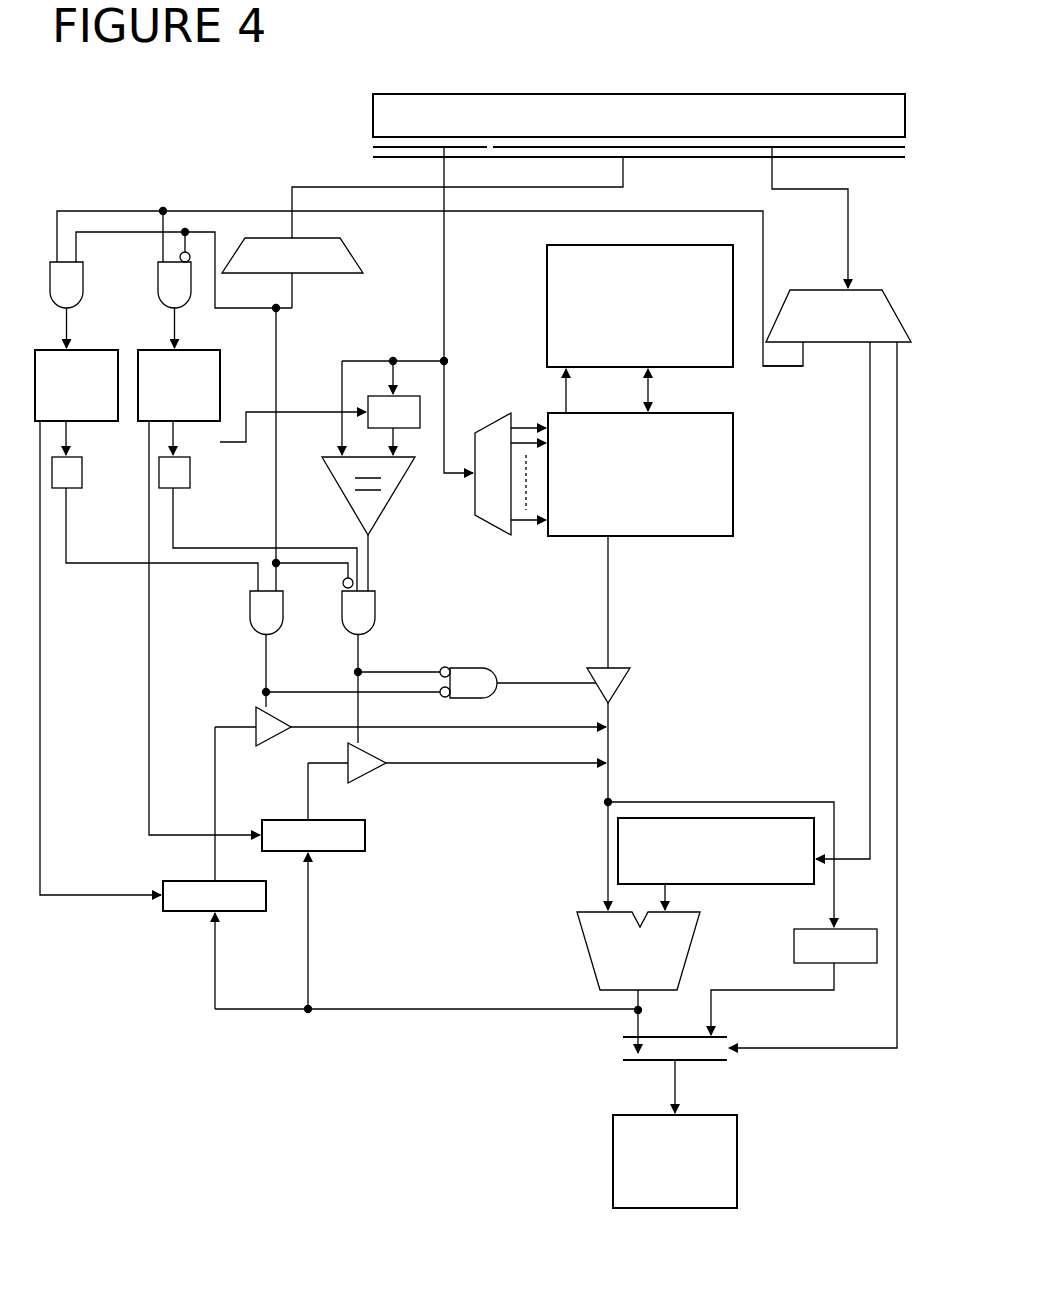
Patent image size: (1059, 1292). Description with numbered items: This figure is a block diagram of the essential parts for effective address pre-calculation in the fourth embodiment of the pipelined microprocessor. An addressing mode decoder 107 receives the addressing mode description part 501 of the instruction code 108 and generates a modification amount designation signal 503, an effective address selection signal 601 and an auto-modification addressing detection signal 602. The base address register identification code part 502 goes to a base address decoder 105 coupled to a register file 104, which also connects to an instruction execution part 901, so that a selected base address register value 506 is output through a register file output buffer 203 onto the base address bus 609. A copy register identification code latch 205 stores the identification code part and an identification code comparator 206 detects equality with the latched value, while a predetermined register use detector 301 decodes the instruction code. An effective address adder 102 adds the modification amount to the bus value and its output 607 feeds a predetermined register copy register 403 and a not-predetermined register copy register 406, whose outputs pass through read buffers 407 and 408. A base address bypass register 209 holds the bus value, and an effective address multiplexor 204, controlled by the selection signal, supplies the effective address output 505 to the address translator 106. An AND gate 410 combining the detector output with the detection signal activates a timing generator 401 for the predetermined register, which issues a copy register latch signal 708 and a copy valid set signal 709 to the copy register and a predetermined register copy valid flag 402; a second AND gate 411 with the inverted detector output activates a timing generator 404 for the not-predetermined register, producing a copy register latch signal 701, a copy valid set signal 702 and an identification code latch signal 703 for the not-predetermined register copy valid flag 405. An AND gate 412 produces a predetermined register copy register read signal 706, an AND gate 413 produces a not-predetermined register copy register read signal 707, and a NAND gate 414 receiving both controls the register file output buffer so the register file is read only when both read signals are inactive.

The instruction code 108 is at (748, 94).
The base address register identification code part 502 is at (444, 262).
The predetermined register use detector 301 is at (362, 268).
The AND gate 410 is at (85, 277).
The AND gate 411 is at (158, 283).
The timing generator for the predetermined register 401 is at (85, 350).
The timing generator for the not-predetermined register 404 is at (200, 350).
The predetermined register copy valid set signal 709 is at (67, 430).
The not-predetermined register copy valid set signal 702 is at (174, 430).
The predetermined register copy valid flag 402 is at (82, 478).
The not-predetermined register copy valid flag 405 is at (190, 478).
The predetermined register copy register latch signal 708 is at (97, 897).
The not-predetermined register copy register latch signal 701 is at (149, 612).
The not-predetermined register copy register identification code latch signal 703 is at (297, 412).
The copy register identification code latch 205 is at (420, 412).
The identification code comparator 206 is at (342, 484).
The instruction execution part 901 is at (547, 308).
The register file 104 is at (733, 505).
The base address decoder 105 is at (495, 535).
The addressing mode decoder 107 is at (833, 290).
The addressing mode description part 501 is at (848, 240).
The auto-modification addressing detection signal 602 is at (783, 368).
The modification amount designation signal 503 is at (870, 526).
The effective address selection signal 601 is at (897, 465).
The AND gate 412 is at (250, 605).
The AND gate 413 is at (375, 608).
The predetermined register copy register read signal 706 is at (262, 655).
The not-predetermined register copy register read signal 707 is at (356, 652).
The NAND gate 414 is at (470, 668).
The register file output buffer 203 is at (622, 682).
The base address register value 506 is at (609, 608).
The predetermined register copy register read buffer 407 is at (275, 746).
The not-predetermined register copy register read buffer 408 is at (370, 783).
The predetermined register copy register 403 is at (186, 912).
The not-predetermined register copy register 406 is at (338, 851).
The output of the effective address adder 607 is at (418, 1010).
The base address bus 609 is at (660, 802).
The effective address adder 102 is at (587, 935).
The base address bypass register 209 is at (872, 912).
The effective address multiplexor 204 is at (622, 1048).
The effective address output 505 is at (677, 1072).
The address translator 106 is at (738, 1173).